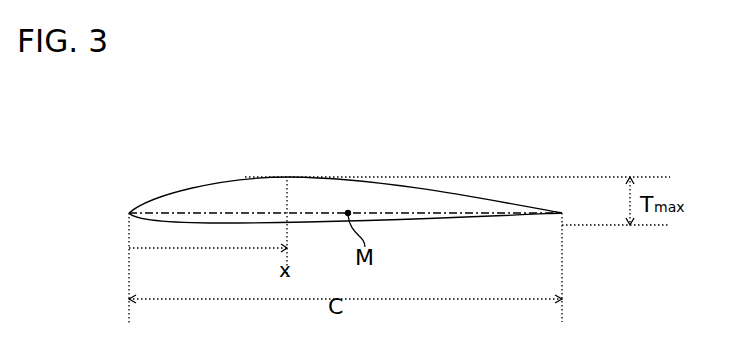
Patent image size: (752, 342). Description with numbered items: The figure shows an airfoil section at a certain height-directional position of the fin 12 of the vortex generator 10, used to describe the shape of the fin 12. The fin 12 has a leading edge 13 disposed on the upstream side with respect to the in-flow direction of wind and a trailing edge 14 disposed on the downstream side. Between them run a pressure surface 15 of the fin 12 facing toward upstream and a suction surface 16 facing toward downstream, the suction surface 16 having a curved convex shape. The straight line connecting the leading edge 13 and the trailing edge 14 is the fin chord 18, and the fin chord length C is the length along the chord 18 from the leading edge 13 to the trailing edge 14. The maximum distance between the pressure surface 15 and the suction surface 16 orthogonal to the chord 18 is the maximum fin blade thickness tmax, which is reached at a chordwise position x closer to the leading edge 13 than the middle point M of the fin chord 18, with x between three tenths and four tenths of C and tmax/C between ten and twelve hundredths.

The vortex generator 10 is at (462, 147).
The fin 12 is at (242, 178).
The leading edge 13 is at (129, 213).
The trailing edge 14 is at (562, 213).
The pressure surface 15 is at (310, 224).
The suction surface 16 is at (277, 178).
The fin chord 18 is at (382, 213).